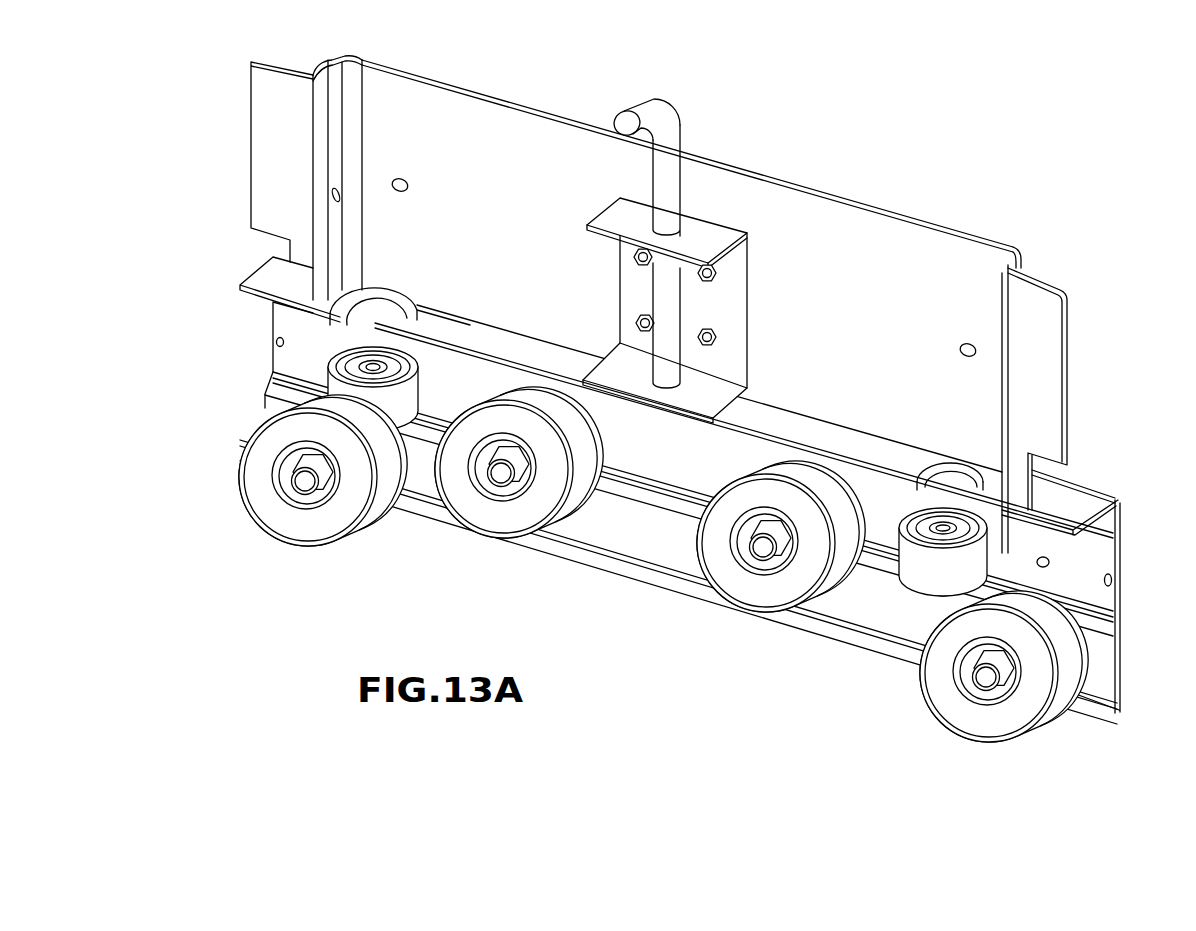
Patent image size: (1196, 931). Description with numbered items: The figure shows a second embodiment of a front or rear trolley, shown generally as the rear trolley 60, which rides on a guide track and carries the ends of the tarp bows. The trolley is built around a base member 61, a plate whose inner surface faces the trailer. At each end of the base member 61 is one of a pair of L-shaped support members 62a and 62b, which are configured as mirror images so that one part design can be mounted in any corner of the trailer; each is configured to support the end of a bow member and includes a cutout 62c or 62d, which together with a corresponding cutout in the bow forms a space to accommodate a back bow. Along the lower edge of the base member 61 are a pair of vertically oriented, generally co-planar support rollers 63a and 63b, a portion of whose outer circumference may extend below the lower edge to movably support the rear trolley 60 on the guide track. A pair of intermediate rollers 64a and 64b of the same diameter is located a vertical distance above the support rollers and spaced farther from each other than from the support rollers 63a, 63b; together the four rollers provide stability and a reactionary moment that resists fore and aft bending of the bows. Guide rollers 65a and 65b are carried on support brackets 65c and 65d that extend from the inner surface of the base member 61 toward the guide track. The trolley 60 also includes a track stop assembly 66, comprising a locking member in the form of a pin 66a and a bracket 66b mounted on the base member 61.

The rear trolley 60 is at (852, 148).
The base member 61 is at (432, 77).
The L-shaped support member 62a is at (1048, 366).
The L-shaped support member 62b is at (283, 187).
The cutout 62c is at (1032, 462).
The cutout 62d is at (270, 238).
The support roller 63a is at (970, 713).
The support roller 63b is at (273, 507).
The intermediate roller 64a is at (745, 572).
The intermediate roller 64b is at (507, 493).
The guide roller 65a is at (908, 500).
The guide roller 65b is at (343, 392).
The support bracket 65c is at (953, 492).
The support bracket 65d is at (430, 370).
The track stop assembly 66 is at (782, 288).
The pin 66a is at (670, 148).
The bracket 66b is at (632, 287).